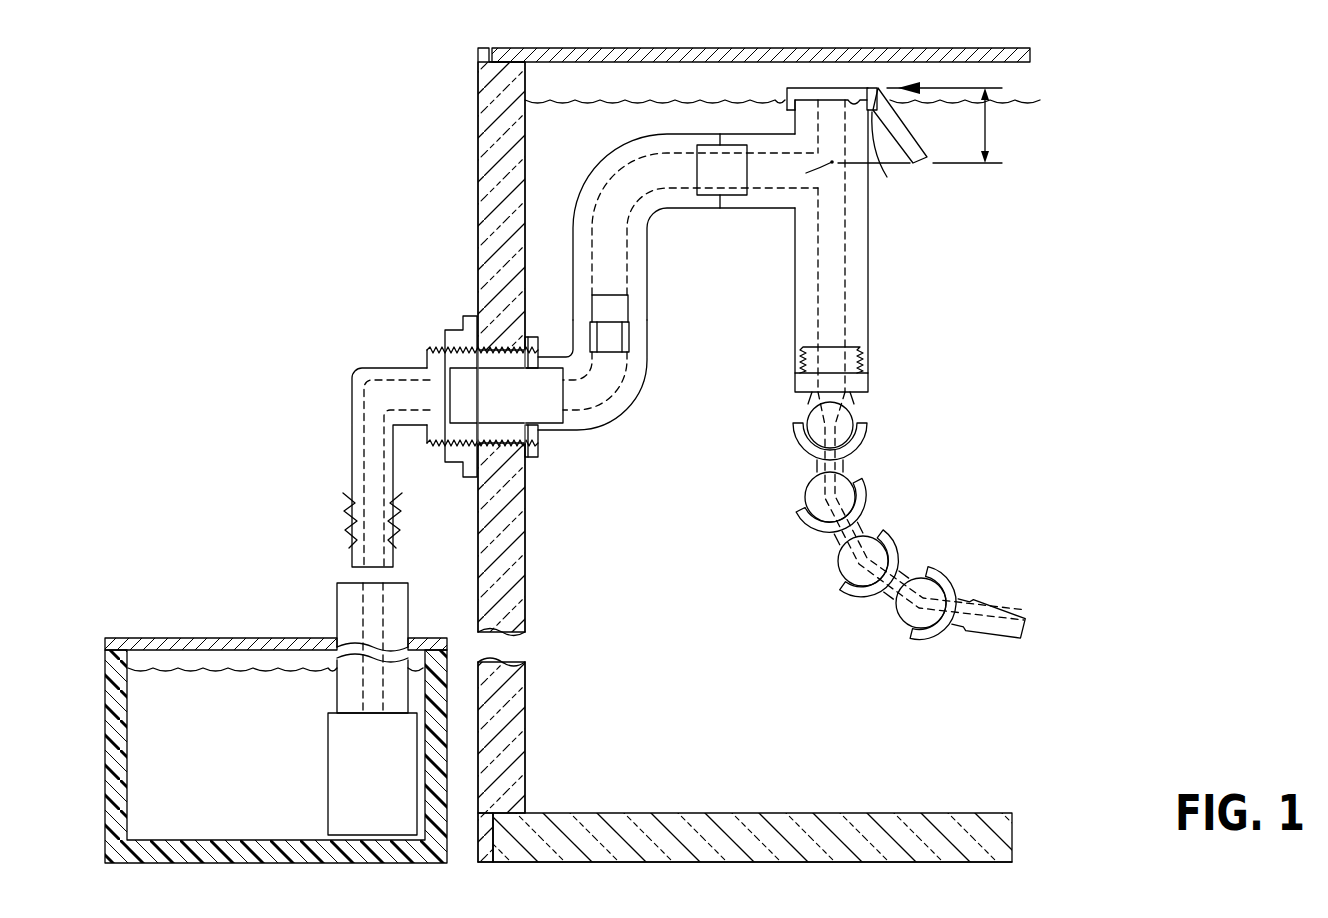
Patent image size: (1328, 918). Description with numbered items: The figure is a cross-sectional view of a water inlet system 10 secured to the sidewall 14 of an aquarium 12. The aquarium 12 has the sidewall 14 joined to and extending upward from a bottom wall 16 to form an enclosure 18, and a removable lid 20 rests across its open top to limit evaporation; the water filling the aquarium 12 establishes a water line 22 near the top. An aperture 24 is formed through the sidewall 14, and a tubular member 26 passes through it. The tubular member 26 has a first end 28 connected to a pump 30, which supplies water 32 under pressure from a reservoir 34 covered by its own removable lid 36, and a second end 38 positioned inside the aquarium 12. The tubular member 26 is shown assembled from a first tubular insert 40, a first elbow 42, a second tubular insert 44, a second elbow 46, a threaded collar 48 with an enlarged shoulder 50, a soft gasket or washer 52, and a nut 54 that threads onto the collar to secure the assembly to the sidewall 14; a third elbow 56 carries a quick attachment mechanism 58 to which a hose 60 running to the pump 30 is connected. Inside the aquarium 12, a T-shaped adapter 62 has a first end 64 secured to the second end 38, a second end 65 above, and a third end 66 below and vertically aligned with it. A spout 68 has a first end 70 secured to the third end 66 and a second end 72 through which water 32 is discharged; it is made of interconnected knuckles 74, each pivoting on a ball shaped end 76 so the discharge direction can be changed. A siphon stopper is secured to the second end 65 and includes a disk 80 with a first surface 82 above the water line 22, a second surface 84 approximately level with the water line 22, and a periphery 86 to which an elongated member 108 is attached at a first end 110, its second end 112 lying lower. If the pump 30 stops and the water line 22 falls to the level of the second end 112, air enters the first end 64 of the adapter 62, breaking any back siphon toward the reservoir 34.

The water inlet system 10 is at (1078, 144).
The aquarium 12 is at (472, 452).
The sidewall 14 is at (477, 145).
The bottom wall 16 is at (905, 862).
The enclosure 18 is at (639, 753).
The removable lid 20 is at (670, 55).
The water line 22 is at (577, 100).
The aperture 24 is at (498, 425).
The tubular member 26 is at (596, 446).
The first end 28 is at (925, 88).
The pump 30 is at (387, 784).
The water 32 is at (585, 151).
The reservoir 34 is at (553, 461).
The removable lid 36 is at (202, 638).
The second end 38 is at (720, 188).
The first tubular insert 40 is at (707, 197).
The first elbow 42 is at (704, 257).
The second tubular insert 44 is at (630, 337).
The second elbow 46 is at (608, 404).
The threaded collar 48 is at (507, 447).
The enlarged shoulder 50 is at (535, 450).
The soft gasket or washer 52 is at (526, 460).
The nut 54 is at (457, 330).
The third elbow 56 is at (360, 467).
The quick attachment mechanism 58 is at (345, 516).
The hose 60 is at (337, 603).
The adapter 62 is at (860, 226).
The first end 64 is at (733, 208).
The second end 65 is at (867, 86).
The third end 66 is at (862, 368).
The spout 68 is at (899, 509).
The first end 70 is at (815, 368).
The second end 72 is at (1028, 612).
The knuckle 74 is at (815, 453).
The ball shaped end 76 is at (807, 407).
The disk 80 is at (846, 131).
The first surface 82 is at (807, 90).
The second surface 84 is at (886, 157).
The periphery 86 is at (785, 100).
The elongated member 108 is at (913, 135).
The first end 110 is at (878, 88).
The second end 112 is at (923, 163).